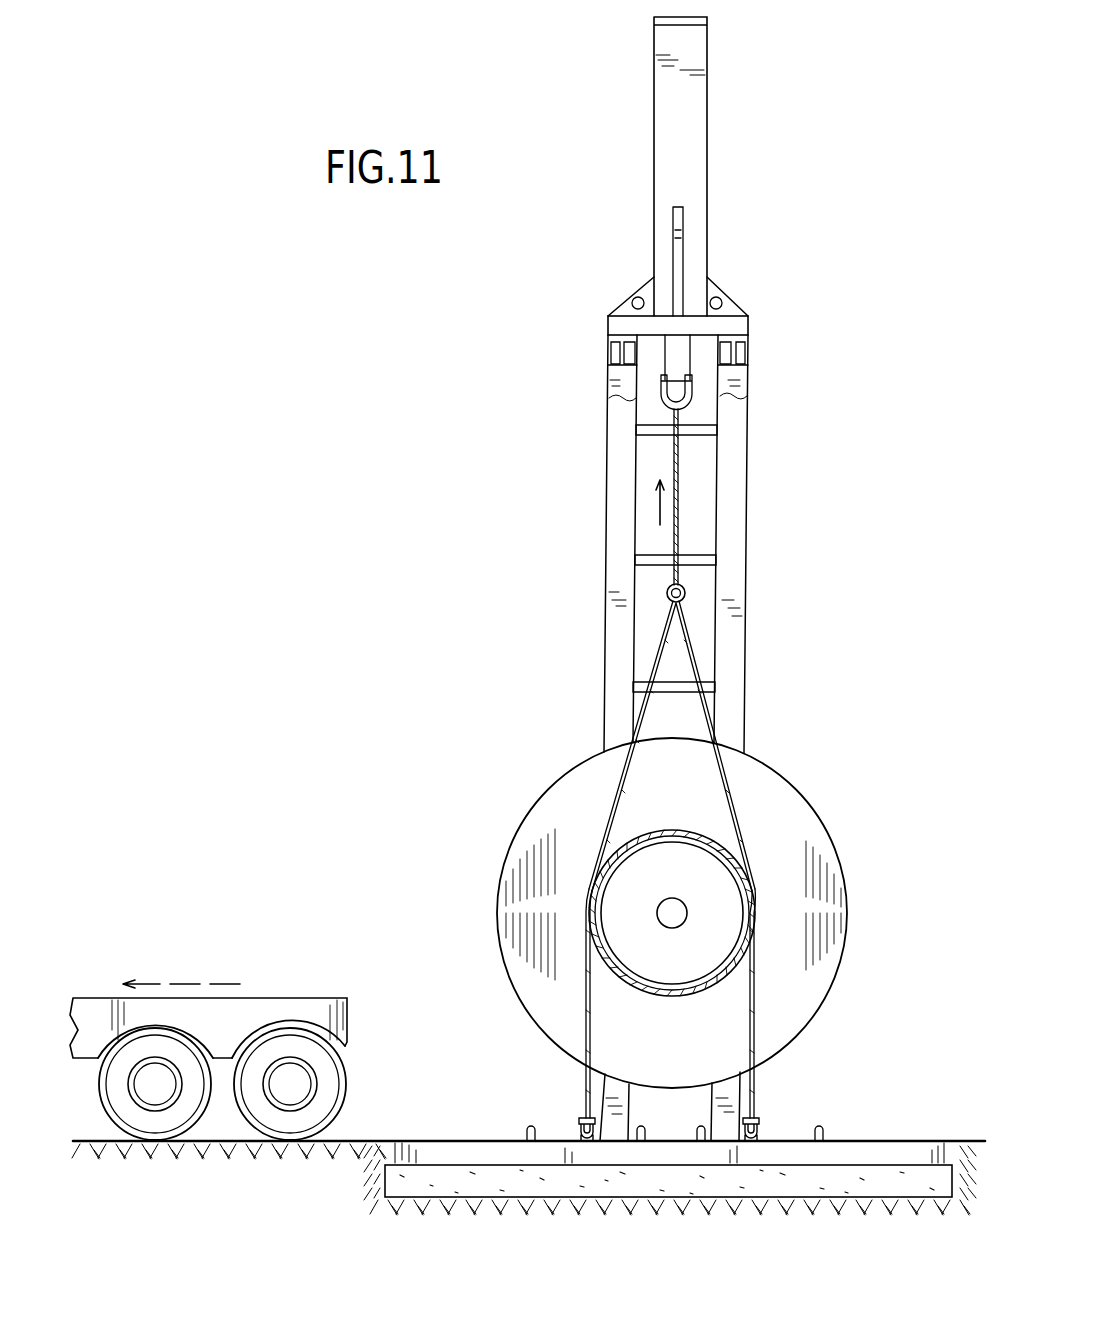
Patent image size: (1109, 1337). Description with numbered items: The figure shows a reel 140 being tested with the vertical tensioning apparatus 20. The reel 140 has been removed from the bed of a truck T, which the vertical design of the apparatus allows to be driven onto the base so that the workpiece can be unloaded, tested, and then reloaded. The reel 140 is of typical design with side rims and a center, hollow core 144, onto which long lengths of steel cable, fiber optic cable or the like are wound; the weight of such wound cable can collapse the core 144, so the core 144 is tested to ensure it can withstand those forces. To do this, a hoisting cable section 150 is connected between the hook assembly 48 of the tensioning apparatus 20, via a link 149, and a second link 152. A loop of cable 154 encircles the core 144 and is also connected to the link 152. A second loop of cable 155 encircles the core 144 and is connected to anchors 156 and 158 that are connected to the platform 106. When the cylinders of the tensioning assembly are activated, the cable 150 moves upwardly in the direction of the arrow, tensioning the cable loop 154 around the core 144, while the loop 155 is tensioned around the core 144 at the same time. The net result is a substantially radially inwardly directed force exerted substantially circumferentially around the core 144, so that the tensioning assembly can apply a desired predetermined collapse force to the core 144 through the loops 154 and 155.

The tensioning apparatus 20 is at (748, 142).
The hook assembly 48 is at (675, 354).
The link 149 is at (692, 402).
The hoisting cable section 150 is at (680, 511).
The second link 152 is at (685, 591).
The loop of cable 154 is at (725, 777).
The second loop of cable 155 is at (585, 1003).
The core 144 is at (710, 825).
The reel 140 is at (830, 875).
The anchor 156 is at (580, 1120).
The anchor 158 is at (762, 1125).
The platform 106 is at (887, 1118).
The truck T is at (282, 978).